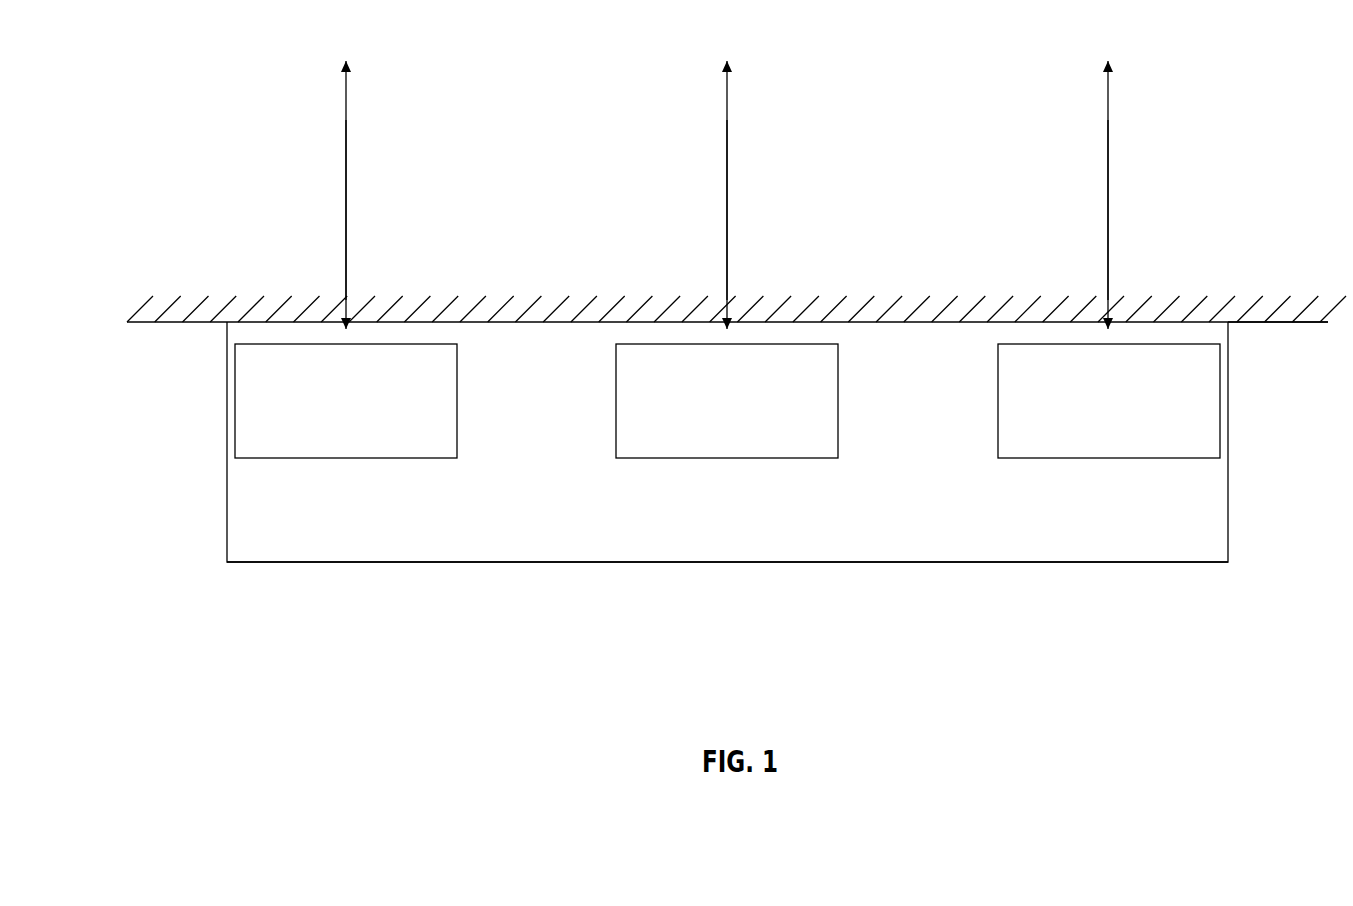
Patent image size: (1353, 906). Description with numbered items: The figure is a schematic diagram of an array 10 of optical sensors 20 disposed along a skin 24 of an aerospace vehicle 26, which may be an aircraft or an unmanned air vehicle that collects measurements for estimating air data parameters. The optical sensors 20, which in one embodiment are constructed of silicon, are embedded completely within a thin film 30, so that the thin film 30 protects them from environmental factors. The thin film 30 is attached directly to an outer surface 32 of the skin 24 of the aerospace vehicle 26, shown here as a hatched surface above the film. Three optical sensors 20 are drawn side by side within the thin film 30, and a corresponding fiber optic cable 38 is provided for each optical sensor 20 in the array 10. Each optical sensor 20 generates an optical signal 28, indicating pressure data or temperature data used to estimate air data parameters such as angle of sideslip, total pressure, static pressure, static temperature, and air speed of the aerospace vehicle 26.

The array 10 is at (1157, 653).
The optical sensor 20 is at (403, 459).
The skin 24 is at (118, 293).
The aerospace vehicle 26 is at (147, 560).
The optical signal 28 is at (348, 111).
The thin film 30 is at (741, 546).
The outer surface 32 is at (1272, 323).
The fiber optic cable 38 is at (348, 170).